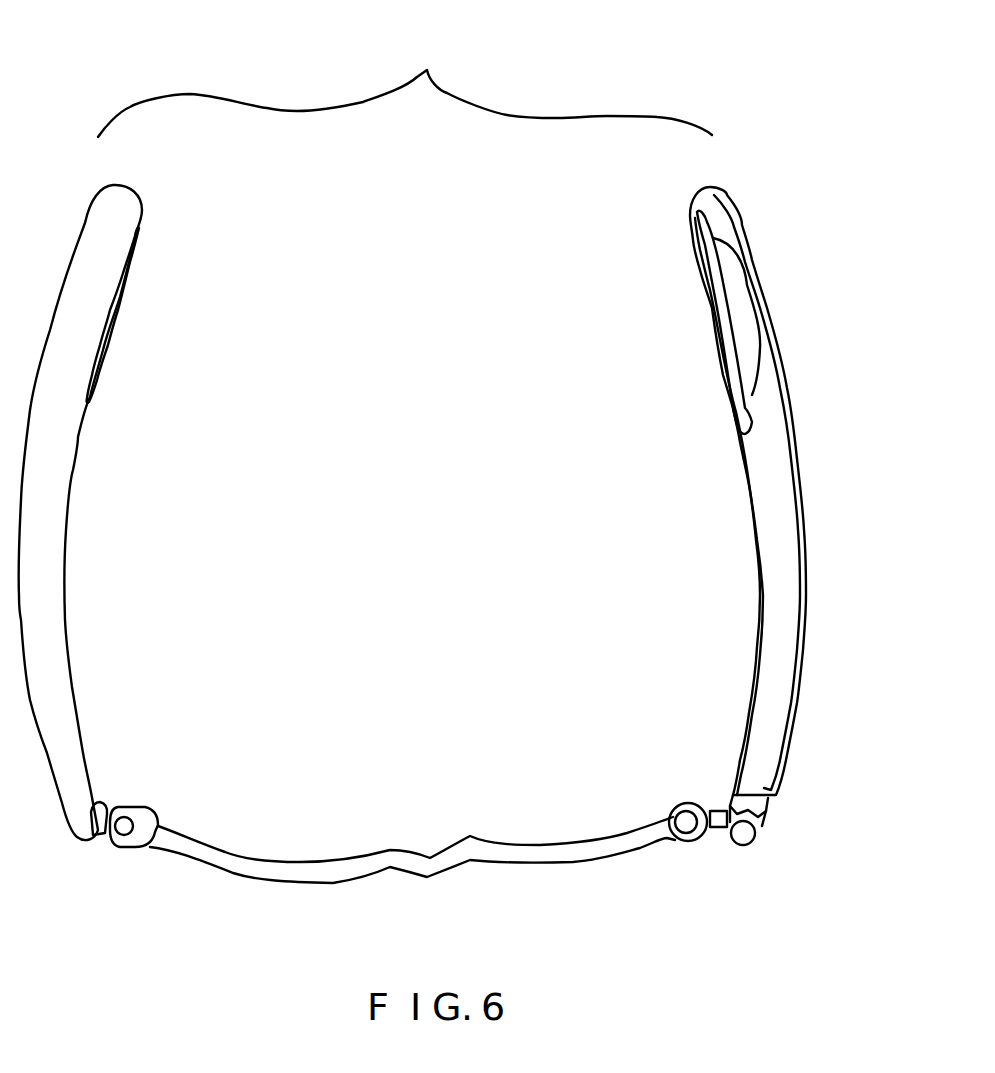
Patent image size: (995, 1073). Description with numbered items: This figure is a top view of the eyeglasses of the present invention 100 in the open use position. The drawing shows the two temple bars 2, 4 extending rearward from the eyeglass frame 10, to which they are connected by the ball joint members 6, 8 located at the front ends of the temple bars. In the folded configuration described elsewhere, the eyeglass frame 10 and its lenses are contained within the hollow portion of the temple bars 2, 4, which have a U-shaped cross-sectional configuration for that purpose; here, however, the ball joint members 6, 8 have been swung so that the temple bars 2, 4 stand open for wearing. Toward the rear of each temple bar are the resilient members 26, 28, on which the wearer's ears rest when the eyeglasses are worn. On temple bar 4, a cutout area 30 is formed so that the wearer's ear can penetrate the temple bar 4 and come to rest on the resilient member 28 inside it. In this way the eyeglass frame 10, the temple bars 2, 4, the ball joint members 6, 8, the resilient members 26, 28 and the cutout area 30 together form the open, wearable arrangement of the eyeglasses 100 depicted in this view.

The eyeglasses of the present invention 100 is at (405, 90).
The temple bar 2 is at (773, 558).
The temple bar 4 is at (55, 457).
The ball joint member 6 is at (116, 808).
The ball joint member 8 is at (723, 808).
The eyeglass frame 10 is at (310, 868).
The resilient member 26 is at (108, 346).
The resilient member 28 is at (712, 328).
The cutout area 30 is at (740, 302).